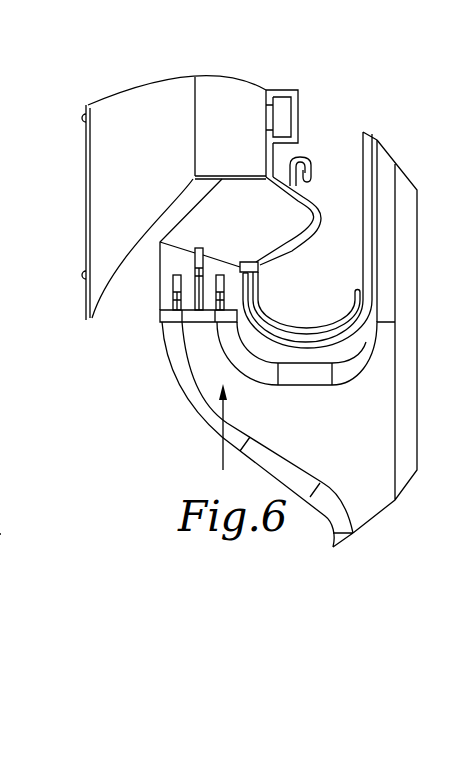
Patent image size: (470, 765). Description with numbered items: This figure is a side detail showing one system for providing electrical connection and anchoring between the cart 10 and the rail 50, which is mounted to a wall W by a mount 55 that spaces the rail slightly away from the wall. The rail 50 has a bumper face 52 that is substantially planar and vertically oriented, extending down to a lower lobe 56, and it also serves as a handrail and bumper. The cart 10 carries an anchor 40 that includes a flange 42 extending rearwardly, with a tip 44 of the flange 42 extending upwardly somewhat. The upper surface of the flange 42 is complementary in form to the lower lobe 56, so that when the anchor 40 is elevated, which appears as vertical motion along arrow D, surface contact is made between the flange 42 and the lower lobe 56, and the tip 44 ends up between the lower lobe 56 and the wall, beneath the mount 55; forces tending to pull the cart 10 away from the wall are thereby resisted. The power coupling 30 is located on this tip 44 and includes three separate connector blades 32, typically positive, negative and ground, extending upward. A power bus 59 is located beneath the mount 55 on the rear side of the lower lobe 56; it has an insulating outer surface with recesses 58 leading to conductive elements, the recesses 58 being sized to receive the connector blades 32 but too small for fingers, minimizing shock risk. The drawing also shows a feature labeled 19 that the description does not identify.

The cart 10 is at (455, 330).
The vehicle structure 19 is at (0, 535).
The power coupling 30 is at (127, 326).
The connector blades 32 is at (175, 300).
The anchor 40 is at (160, 398).
The flange 42 is at (324, 437).
The tip 44 is at (219, 368).
The rail 50 is at (112, 78).
The bumper face 52 is at (365, 160).
The mount 55 is at (153, 149).
The lower lobe 56 is at (340, 320).
The recesses 58 is at (195, 258).
The power bus 59 is at (260, 219).